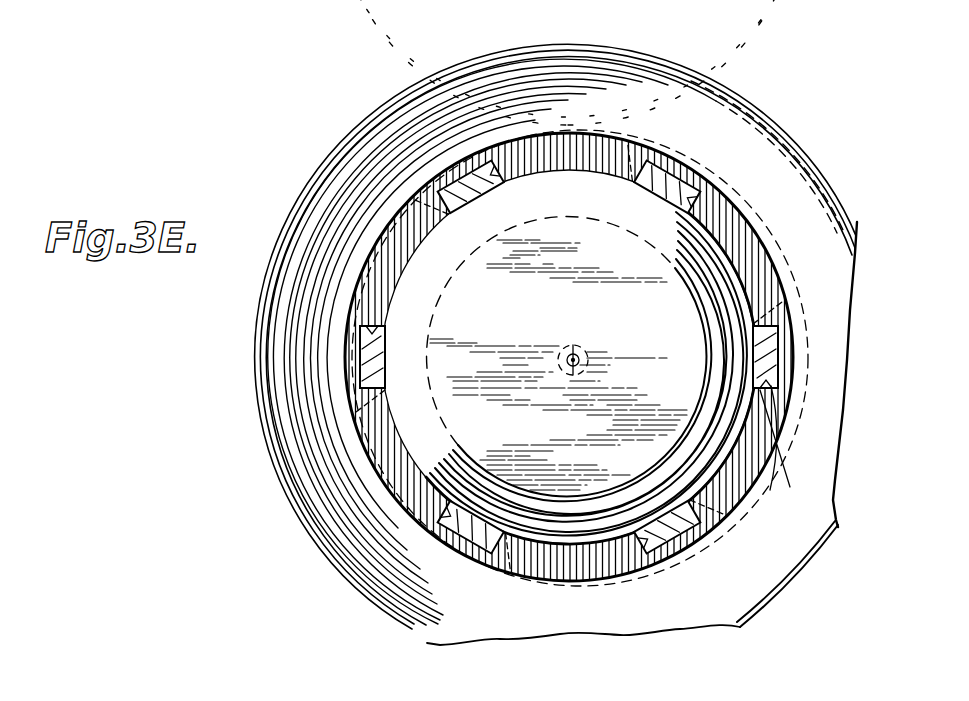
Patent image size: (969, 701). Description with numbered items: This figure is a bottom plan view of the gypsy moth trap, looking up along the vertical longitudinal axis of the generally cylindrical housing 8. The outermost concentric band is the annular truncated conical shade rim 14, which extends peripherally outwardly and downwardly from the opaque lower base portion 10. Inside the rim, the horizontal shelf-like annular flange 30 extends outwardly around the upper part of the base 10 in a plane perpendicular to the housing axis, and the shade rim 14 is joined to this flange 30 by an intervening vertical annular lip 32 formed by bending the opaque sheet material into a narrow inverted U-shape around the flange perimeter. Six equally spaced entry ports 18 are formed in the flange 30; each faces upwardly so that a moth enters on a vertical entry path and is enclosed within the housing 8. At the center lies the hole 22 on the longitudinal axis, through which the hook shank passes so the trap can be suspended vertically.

The housing 8 is at (772, 82).
The lower base portion 10 is at (294, 516).
The shade rim 14 is at (586, 58).
The entry port 18 is at (492, 198).
The central hole 22 is at (581, 343).
The flange 30 is at (750, 272).
The annular lip 32 is at (632, 156).